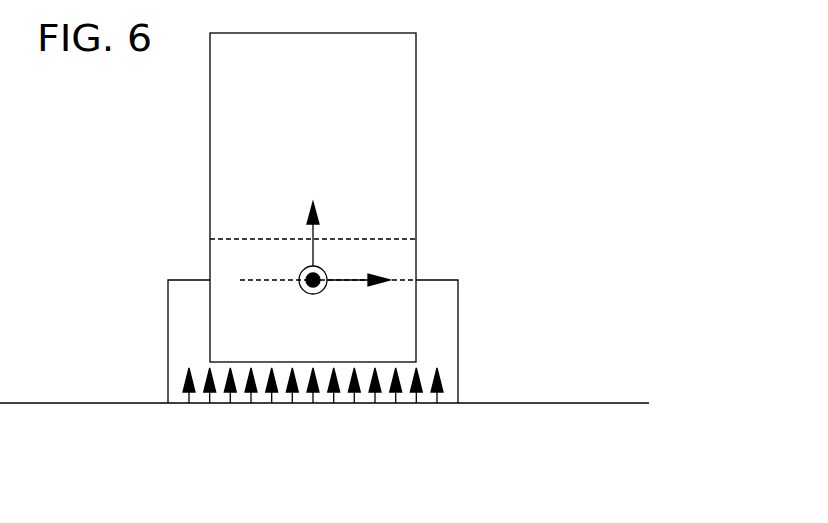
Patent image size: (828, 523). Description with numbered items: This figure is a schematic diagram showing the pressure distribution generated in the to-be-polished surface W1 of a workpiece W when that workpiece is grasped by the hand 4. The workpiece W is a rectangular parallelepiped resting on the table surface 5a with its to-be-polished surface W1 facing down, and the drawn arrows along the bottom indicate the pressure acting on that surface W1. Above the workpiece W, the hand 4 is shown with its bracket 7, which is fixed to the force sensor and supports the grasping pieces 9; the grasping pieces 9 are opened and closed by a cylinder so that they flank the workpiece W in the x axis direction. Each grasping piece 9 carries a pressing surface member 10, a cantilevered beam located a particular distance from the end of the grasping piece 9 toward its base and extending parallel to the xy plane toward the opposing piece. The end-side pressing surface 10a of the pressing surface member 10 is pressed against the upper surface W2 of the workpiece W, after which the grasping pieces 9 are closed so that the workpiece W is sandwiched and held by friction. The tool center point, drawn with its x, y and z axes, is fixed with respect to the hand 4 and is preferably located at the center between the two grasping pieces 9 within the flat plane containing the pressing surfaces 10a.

The hand 4 is at (311, 197).
The bracket 7 is at (416, 70).
The grasping piece 9 is at (416, 305).
The pressing surface member 10 is at (381, 239).
The pressing surface 10a is at (238, 280).
The table surface 5a is at (66, 403).
The workpiece W is at (474, 365).
The to-be-polished surface W1 is at (322, 404).
The upper surface W2 is at (440, 280).